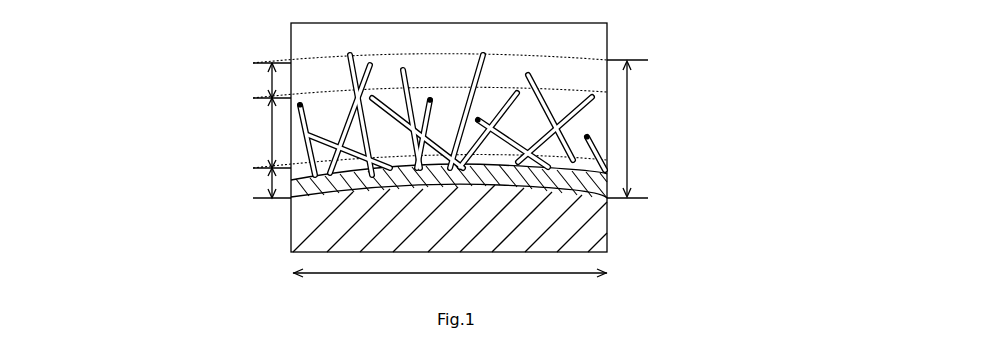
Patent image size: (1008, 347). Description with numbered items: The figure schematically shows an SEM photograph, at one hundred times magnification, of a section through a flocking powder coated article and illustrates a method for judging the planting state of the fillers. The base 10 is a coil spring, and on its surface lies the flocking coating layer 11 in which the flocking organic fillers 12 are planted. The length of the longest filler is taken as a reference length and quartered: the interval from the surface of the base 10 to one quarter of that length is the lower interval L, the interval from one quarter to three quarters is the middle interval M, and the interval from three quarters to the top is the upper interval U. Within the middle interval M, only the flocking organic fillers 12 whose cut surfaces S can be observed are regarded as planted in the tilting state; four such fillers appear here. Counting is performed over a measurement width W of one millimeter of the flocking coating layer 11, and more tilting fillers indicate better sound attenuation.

The coil spring (base) 10 is at (609, 218).
The flocking coating layer 11 is at (628, 120).
The flocking organic filler 12 is at (436, 100).
The cut surface S is at (428, 110).
The upper interval U is at (272, 80).
The middle interval M is at (272, 130).
The lower interval L is at (272, 182).
The measurement width W is at (452, 276).